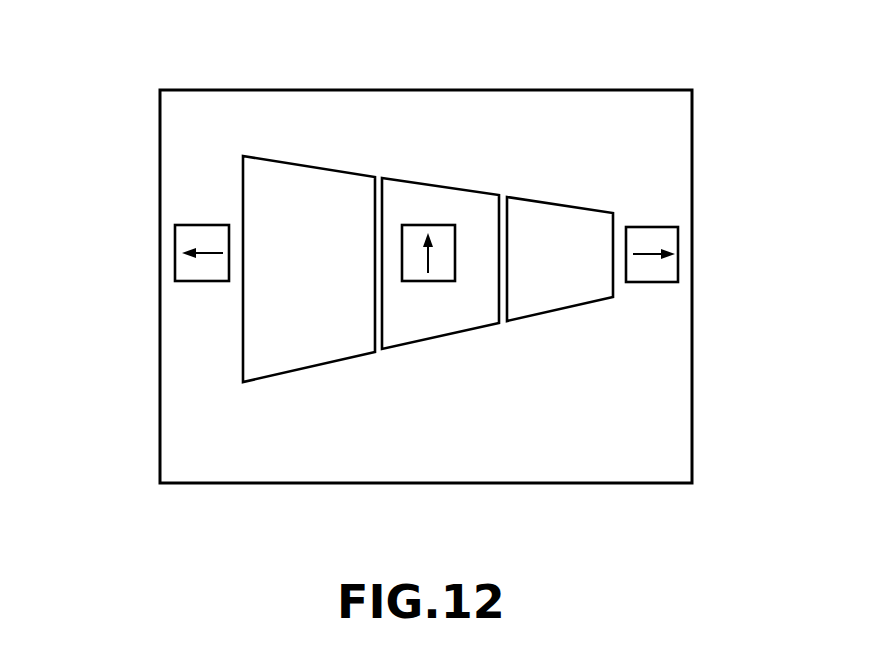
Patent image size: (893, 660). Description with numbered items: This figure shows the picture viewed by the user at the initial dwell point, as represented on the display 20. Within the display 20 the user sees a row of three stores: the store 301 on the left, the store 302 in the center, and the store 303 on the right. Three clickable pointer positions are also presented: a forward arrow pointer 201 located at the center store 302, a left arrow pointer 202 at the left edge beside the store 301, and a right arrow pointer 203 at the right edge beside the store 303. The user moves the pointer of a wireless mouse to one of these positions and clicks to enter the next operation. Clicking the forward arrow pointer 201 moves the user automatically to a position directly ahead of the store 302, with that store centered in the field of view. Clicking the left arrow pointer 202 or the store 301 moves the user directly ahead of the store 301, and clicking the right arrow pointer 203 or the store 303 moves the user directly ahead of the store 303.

The display 20 is at (692, 155).
The forward arrow pointer 201 is at (415, 234).
The left arrow pointer 202 is at (185, 237).
The right arrow pointer 203 is at (660, 272).
The store 301 is at (323, 348).
The store 302 is at (462, 318).
The store 303 is at (582, 293).